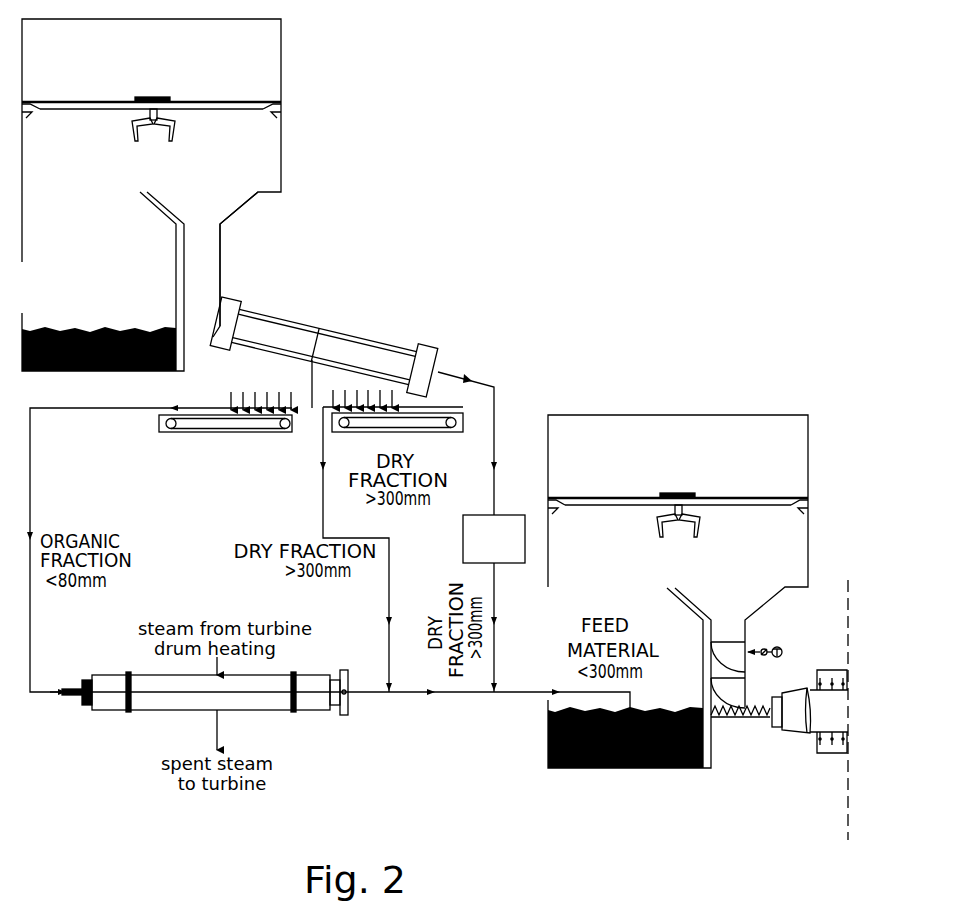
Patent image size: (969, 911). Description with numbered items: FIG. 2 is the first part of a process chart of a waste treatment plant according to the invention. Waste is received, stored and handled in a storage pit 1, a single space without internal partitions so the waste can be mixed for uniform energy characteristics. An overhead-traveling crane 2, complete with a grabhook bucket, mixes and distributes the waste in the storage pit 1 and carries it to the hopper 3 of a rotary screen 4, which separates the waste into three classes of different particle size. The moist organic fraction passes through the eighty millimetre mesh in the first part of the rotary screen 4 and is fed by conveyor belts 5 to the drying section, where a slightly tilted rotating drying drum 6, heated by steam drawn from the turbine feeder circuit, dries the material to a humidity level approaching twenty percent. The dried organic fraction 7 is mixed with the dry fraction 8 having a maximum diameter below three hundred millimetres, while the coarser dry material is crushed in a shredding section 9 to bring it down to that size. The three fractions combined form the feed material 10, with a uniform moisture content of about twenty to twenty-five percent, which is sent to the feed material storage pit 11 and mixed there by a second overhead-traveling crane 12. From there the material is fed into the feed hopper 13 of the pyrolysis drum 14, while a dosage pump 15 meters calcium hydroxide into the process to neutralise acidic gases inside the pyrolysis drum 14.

The storage pit 1 is at (107, 313).
The overhead-traveling crane 2 is at (236, 104).
The hopper 3 is at (241, 206).
The rotary screen 4 is at (295, 326).
The conveyor belts 5 is at (213, 432).
The drying drum 6 is at (150, 697).
The dried organic fraction 7 is at (373, 693).
The dry fraction 8 is at (388, 648).
The shredding section 9 is at (501, 549).
The feed material 10 is at (520, 693).
The feed material storage pit 11 is at (623, 770).
The overhead-traveling crane 12 is at (735, 498).
The feed hopper 13 is at (766, 604).
The pyrolysis drum 14 is at (816, 730).
The dosage pump 15 is at (781, 646).